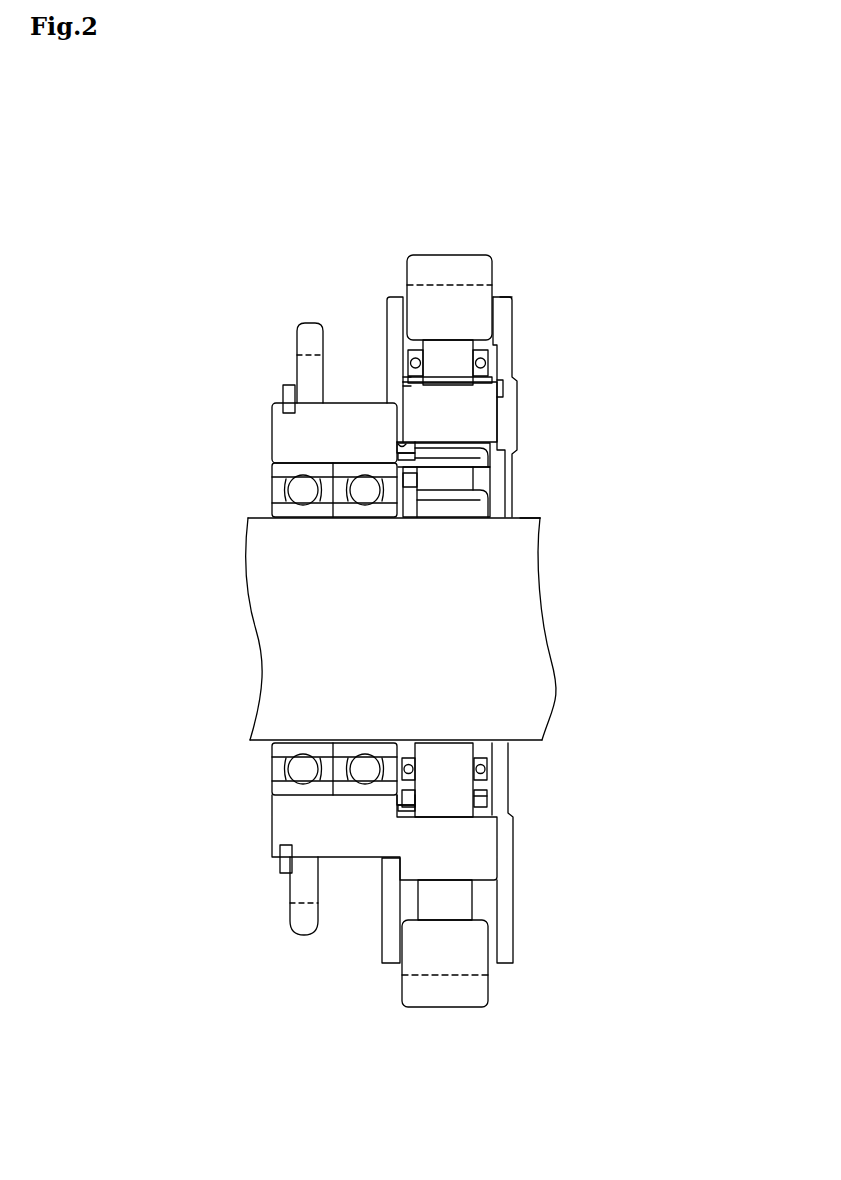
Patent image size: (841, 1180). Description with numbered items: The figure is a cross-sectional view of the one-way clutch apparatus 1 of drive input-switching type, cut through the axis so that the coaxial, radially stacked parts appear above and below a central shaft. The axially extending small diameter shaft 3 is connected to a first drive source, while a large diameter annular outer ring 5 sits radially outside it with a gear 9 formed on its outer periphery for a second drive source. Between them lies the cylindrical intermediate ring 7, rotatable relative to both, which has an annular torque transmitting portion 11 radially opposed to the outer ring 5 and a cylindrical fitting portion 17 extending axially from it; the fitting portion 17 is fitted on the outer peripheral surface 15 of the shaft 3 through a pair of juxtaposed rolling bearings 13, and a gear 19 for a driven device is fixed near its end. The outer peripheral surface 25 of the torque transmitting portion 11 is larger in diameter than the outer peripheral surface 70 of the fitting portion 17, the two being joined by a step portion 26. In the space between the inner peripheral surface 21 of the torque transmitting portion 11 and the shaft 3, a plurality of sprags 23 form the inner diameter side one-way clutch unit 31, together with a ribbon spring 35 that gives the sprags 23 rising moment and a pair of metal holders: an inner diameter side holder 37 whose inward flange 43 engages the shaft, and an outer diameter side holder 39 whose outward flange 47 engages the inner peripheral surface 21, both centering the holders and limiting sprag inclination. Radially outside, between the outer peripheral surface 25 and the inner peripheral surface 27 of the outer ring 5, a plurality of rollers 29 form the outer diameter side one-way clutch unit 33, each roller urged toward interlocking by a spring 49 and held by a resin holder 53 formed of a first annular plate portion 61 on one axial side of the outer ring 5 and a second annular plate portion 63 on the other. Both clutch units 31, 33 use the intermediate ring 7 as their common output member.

The one-way clutch apparatus 1 is at (650, 182).
The shaft 3 is at (532, 683).
The outer ring 5 is at (470, 591).
The intermediate ring 7 is at (344, 637).
The gear 9 is at (468, 267).
The torque transmitting portion 11 is at (487, 410).
The rolling bearings 13 is at (350, 515).
The outer peripheral surface 15 is at (533, 515).
The fitting portion 17 is at (290, 443).
The gear 19 is at (305, 343).
The inner peripheral surface 21 is at (400, 443).
The sprags 23 is at (453, 510).
The outer peripheral surface 25 is at (490, 378).
The step portion 26 is at (407, 390).
The inner peripheral surface 27 is at (477, 347).
The rollers 29 is at (440, 350).
The inner diameter side one-way clutch unit 31 is at (612, 448).
The outer diameter side one-way clutch unit 33 is at (612, 317).
The ribbon spring 35 is at (492, 773).
The inner diameter side holder 37 is at (433, 497).
The outer diameter side holder 39 is at (447, 458).
The inward flange 43 is at (487, 757).
The outward flange 47 is at (492, 802).
The springs 49 is at (410, 362).
The holder 53 is at (522, 293).
The first annular plate portion 61 is at (505, 472).
The second annular plate portion 63 is at (392, 317).
The outer peripheral surface 70 is at (347, 400).